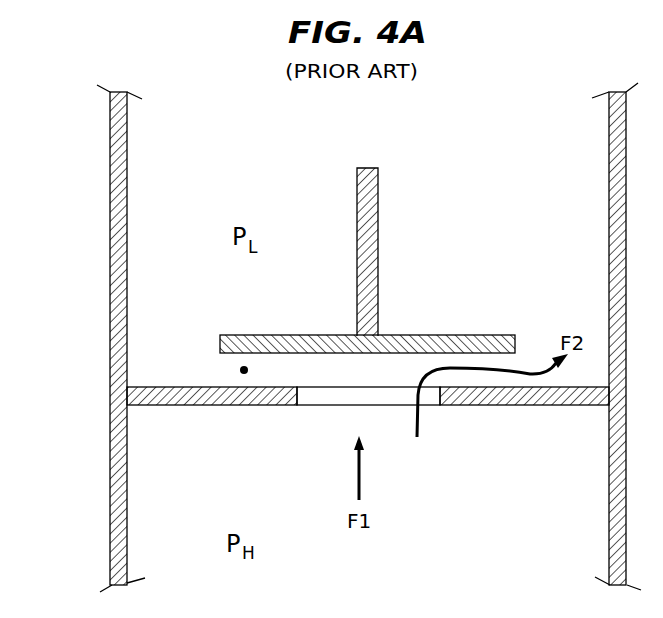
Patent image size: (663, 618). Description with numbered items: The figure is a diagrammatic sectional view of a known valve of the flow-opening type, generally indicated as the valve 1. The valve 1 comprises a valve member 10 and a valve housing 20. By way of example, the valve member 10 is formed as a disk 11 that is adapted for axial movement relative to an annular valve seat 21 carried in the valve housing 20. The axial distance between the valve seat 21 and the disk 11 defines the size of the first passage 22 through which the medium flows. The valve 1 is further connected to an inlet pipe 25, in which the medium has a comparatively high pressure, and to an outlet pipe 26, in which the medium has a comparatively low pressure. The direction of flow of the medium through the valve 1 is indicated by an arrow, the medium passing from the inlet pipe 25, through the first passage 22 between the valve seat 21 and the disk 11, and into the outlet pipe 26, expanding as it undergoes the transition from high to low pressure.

The valve 1 is at (78, 106).
The valve member 10 is at (399, 206).
The disk 11 is at (440, 335).
The valve housing 20 is at (597, 256).
The annular valve seat 21 is at (238, 405).
The first passage 22 is at (240, 370).
The inlet pipe 25 is at (537, 557).
The outlet pipe 26 is at (517, 124).